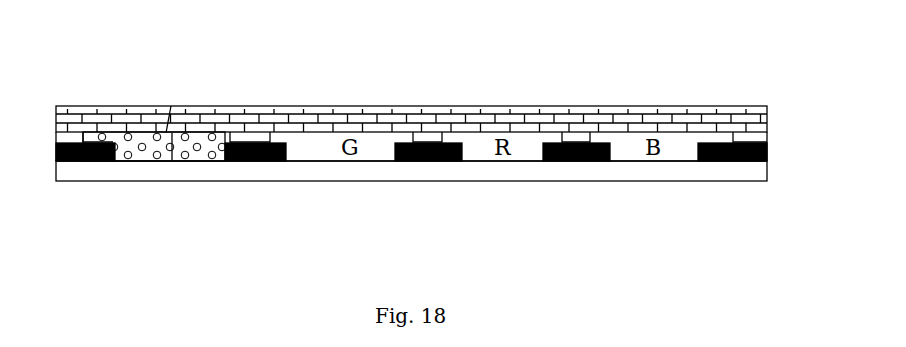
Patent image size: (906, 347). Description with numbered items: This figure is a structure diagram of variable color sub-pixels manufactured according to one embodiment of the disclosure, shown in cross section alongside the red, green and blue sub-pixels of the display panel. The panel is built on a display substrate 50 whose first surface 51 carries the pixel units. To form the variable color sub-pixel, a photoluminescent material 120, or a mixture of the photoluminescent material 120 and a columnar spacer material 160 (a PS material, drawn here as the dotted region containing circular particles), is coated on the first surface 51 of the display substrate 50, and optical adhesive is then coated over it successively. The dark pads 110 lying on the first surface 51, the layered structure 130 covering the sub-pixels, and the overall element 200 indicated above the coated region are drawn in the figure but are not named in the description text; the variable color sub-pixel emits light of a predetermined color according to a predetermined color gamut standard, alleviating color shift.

The display substrate 50 is at (540, 170).
The first surface 51 is at (655, 161).
The electrode pad 110 is at (430, 161).
The photoluminescent material 120 is at (172, 160).
The encapsulation layer 130 is at (435, 143).
The columnar spacer material 160 is at (152, 147).
The light emitting device 200 is at (171, 106).